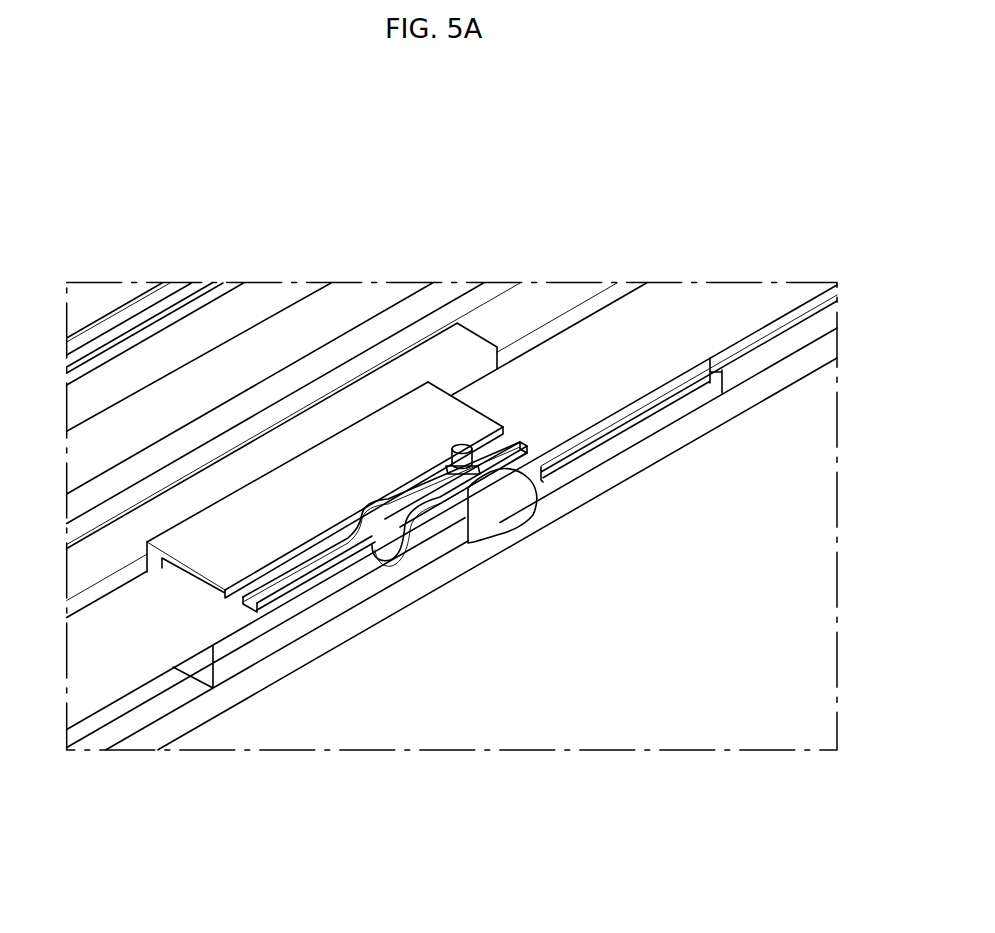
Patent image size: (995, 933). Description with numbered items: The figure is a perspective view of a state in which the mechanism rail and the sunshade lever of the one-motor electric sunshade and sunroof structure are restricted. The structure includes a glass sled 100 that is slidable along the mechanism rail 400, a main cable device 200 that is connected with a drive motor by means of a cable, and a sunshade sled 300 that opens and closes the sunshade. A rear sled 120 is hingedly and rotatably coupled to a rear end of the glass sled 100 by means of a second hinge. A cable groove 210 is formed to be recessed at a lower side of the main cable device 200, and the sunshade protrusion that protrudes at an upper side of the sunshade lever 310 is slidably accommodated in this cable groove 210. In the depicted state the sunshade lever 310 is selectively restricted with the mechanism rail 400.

The glass sled 100 is at (443, 357).
The rear sled 120 is at (545, 303).
The main cable device 200 is at (380, 432).
The cable groove 210 is at (414, 494).
The sunshade sled 300 is at (295, 658).
The sunshade lever 310 is at (517, 503).
The mechanism rail 400 is at (665, 320).